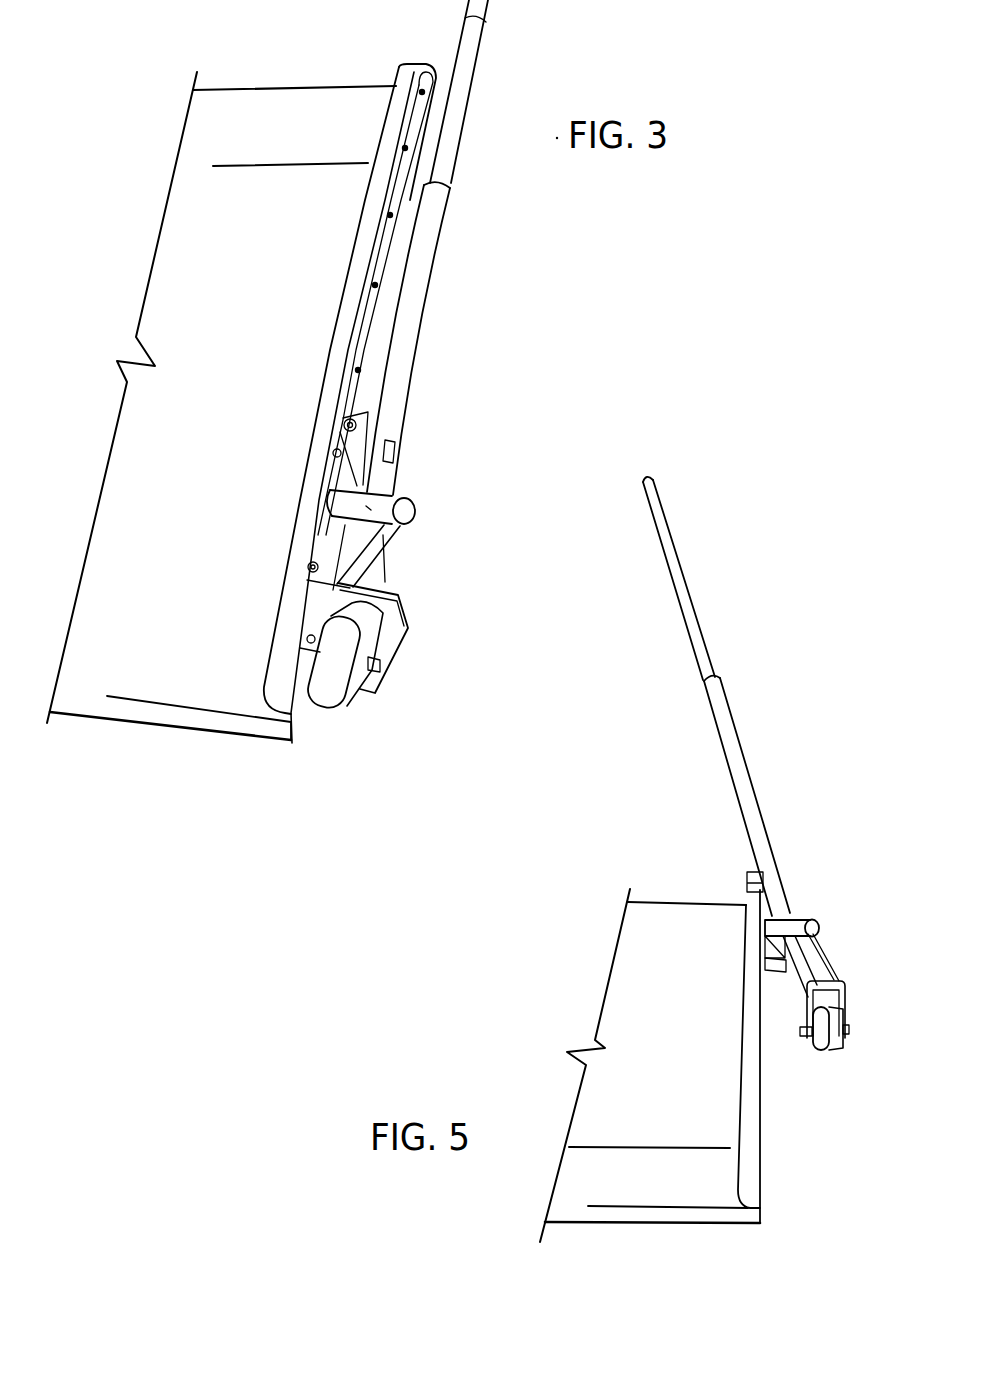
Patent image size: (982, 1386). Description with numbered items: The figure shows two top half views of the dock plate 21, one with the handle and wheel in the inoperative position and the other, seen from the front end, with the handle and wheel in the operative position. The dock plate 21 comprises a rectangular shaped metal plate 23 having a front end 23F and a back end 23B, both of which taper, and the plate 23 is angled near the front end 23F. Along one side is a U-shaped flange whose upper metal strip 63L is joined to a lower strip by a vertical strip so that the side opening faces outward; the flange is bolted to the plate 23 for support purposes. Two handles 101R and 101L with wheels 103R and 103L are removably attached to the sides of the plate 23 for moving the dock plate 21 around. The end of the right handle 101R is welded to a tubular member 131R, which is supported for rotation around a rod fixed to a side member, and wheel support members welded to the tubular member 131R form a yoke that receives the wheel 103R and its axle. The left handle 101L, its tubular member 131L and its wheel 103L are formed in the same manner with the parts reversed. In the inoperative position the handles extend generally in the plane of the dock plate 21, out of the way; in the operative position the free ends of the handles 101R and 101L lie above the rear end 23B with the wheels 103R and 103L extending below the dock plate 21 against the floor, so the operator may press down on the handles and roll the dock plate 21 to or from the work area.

In FIG. 3, the dock plate 21 is at (468, 329).
In FIG. 5, the dock plate 21 is at (651, 1047).
In FIG. 3, the metal plate 23 is at (200, 218).
In FIG. 5, the metal plate 23 is at (635, 1065).
In FIG. 3, the front end 23F is at (330, 84).
In FIG. 5, the front end 23F is at (674, 1222).
In FIG. 3, the back end 23B is at (210, 735).
In FIG. 5, the back end 23B is at (723, 903).
In FIG. 5, the upper metal strip 63L is at (748, 1146).
In FIG. 3, the right handle 101R is at (402, 392).
In FIG. 5, the left handle 101L is at (758, 801).
In FIG. 3, the tubular member 131R is at (385, 478).
In FIG. 5, the tubular member 131L is at (783, 909).
In FIG. 3, the right wheel 103R is at (325, 693).
In FIG. 5, the left wheel 103L is at (820, 1058).